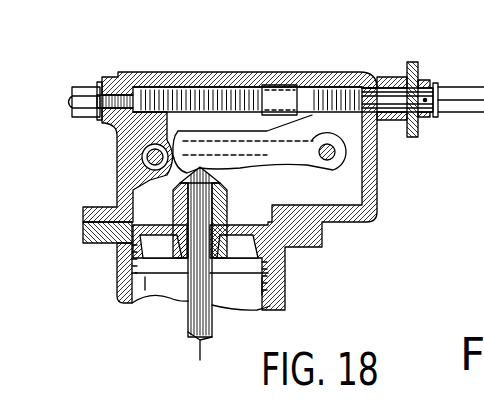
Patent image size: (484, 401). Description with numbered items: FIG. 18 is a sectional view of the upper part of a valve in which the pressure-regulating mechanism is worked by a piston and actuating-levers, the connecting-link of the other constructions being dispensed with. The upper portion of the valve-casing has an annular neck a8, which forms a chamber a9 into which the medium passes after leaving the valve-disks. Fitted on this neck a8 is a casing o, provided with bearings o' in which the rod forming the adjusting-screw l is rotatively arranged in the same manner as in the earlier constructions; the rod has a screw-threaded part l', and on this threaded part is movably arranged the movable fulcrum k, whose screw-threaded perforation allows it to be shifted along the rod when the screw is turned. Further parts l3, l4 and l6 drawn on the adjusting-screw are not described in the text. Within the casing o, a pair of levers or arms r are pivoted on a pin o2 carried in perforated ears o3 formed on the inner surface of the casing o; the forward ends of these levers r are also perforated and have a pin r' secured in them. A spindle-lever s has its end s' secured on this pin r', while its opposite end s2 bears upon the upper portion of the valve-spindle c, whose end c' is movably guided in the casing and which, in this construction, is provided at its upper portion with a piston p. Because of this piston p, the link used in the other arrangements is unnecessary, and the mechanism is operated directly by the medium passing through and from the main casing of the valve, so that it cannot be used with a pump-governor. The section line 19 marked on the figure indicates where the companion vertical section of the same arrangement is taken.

The casing o is at (230, 178).
The bearings o' is at (264, 84).
The pin o2 is at (159, 144).
The perforated ears o3 is at (151, 139).
The piston p is at (250, 227).
The annular neck a8 is at (118, 287).
The chamber a9 is at (201, 291).
The rod (adjusting-screw) l is at (392, 73).
The screw-threaded part of the rod l' is at (290, 73).
The collar flange l3 is at (417, 62).
The ring l4 is at (436, 83).
The nut l6 is at (90, 118).
The movable fulcrum k is at (279, 100).
The section line 19 is at (267, 158).
The levers or arms r is at (259, 156).
The pin r' is at (338, 129).
The spindle-lever s is at (233, 153).
The end of the spindle-lever s2 is at (190, 152).
The end of the spindle-lever s' is at (337, 167).
The valve-spindle c is at (186, 264).
The end of the valve-spindle c' is at (182, 212).